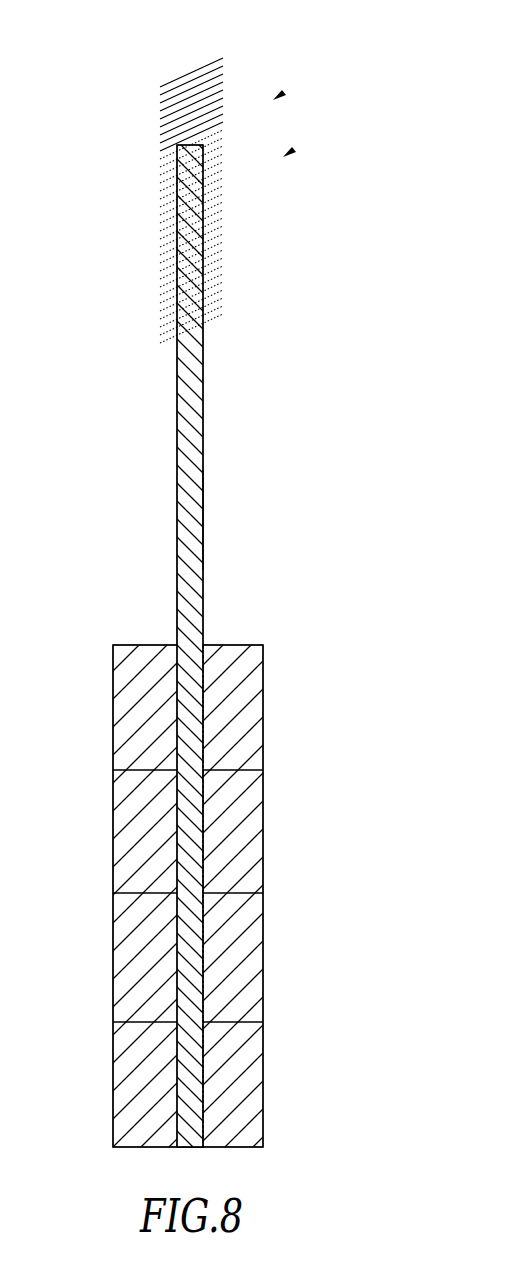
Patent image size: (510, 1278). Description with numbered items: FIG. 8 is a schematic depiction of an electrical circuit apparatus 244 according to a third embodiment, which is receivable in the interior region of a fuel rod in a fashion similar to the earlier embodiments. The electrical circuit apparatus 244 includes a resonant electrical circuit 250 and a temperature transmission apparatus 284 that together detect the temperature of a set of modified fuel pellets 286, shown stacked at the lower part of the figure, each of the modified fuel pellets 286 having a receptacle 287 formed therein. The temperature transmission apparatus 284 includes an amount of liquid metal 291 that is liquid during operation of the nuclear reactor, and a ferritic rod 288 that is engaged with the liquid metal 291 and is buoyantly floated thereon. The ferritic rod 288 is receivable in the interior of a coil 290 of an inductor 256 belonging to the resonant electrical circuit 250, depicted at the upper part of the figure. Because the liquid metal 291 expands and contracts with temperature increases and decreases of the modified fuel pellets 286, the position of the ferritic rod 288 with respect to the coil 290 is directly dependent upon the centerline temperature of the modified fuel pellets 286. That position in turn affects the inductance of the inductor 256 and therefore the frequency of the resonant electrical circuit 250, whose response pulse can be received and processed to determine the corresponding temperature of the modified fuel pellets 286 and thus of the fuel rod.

The electrical circuit apparatus 244 is at (283, 94).
The resonant electrical circuit 250 is at (293, 150).
The inductor 256 is at (176, 74).
The temperature transmission apparatus 284 is at (208, 454).
The modified fuel pellets 286 is at (263, 680).
The receptacle 287 is at (200, 708).
The ferritic rod 288 is at (212, 322).
The coil 290 is at (163, 104).
The liquid metal 291 is at (203, 518).